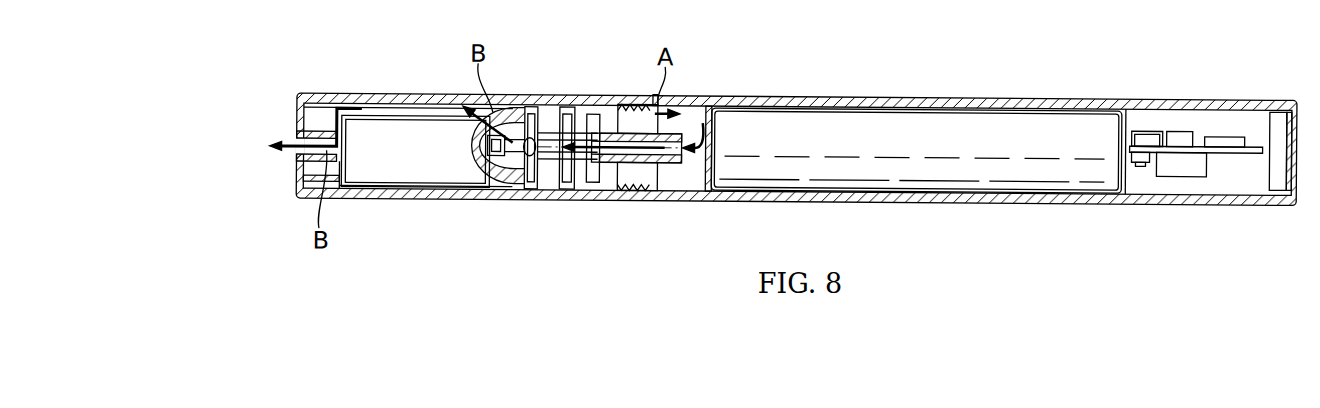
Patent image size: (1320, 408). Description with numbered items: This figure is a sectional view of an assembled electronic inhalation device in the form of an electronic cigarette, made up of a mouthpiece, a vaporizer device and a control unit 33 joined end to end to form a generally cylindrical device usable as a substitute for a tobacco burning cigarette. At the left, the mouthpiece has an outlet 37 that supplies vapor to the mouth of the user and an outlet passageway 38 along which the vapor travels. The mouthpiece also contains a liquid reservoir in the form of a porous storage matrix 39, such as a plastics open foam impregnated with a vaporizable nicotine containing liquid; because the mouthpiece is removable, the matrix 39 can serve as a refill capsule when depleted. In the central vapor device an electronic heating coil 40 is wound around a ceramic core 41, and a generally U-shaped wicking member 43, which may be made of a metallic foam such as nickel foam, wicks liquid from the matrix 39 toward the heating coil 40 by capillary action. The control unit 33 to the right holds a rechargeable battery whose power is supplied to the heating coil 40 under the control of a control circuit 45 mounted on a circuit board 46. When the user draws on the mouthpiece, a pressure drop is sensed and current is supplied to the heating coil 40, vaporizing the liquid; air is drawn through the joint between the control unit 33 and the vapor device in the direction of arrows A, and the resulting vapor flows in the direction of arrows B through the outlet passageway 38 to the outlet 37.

The control unit 33 is at (935, 106).
The outlet 37 is at (301, 137).
The outlet passageway 38 is at (380, 107).
The porous storage matrix 39 is at (378, 176).
The heating coil 40 is at (537, 188).
The ceramic core 41 is at (531, 126).
The U-shaped wicking member 43 is at (470, 155).
The control circuit 45 is at (1196, 153).
The circuit board 46 is at (1201, 130).